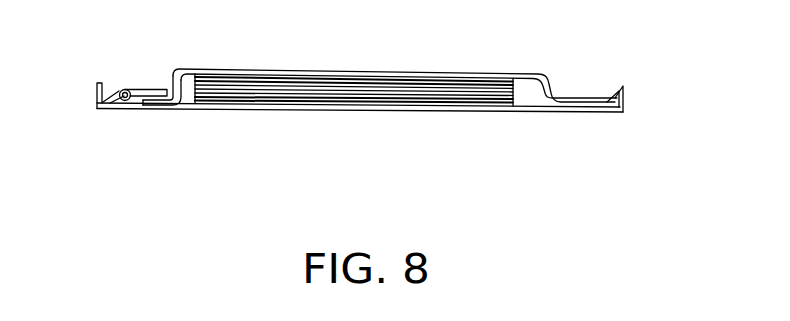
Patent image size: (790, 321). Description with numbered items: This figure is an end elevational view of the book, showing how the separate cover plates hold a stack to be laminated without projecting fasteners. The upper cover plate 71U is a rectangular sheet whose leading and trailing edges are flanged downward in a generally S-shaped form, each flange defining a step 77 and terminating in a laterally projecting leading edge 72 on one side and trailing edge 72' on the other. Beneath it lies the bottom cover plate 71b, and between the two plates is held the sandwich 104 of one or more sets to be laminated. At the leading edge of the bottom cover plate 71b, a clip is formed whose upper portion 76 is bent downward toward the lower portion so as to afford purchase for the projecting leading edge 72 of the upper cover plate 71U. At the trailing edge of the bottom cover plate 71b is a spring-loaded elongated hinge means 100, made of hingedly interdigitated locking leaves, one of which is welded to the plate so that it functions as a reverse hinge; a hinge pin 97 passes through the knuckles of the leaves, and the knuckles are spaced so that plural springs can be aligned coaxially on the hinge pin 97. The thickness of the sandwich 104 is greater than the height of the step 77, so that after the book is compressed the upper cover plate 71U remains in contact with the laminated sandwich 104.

The spring-loaded elongated hinge means 100 is at (138, 84).
The step 77 is at (175, 84).
The upper cover plate 71U is at (383, 70).
The leading edge 72 is at (395, 74).
The upper portion of the clip 76 is at (615, 87).
The hinge pin 97 is at (110, 107).
The trailing edge 72' is at (156, 120).
The sandwich 104 is at (380, 78).
The bottom cover plate 71b is at (427, 108).